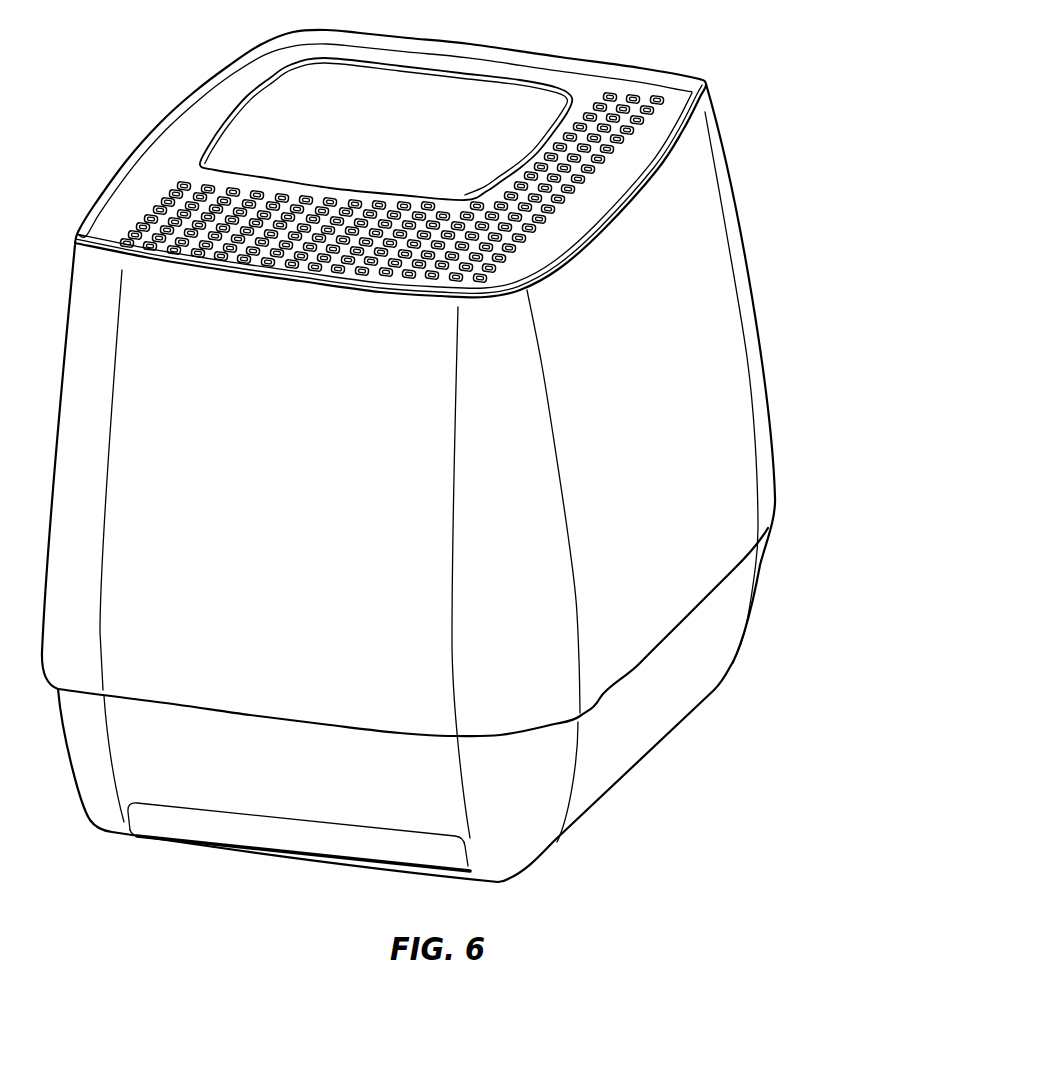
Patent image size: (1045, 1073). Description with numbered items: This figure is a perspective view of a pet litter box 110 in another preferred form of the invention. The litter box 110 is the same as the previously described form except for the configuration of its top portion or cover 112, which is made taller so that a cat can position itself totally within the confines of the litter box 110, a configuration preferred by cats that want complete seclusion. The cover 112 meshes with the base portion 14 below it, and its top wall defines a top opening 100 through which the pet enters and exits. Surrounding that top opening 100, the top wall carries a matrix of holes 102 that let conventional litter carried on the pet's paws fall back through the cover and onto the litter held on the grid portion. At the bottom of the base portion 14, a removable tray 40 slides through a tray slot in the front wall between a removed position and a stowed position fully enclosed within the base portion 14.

The base portion 14 is at (672, 747).
The removable tray 40 is at (230, 848).
The top opening 100 is at (507, 80).
The matrix of holes 102 is at (633, 92).
The pet litter box 110 is at (740, 212).
The top portion or cover 112 is at (705, 277).